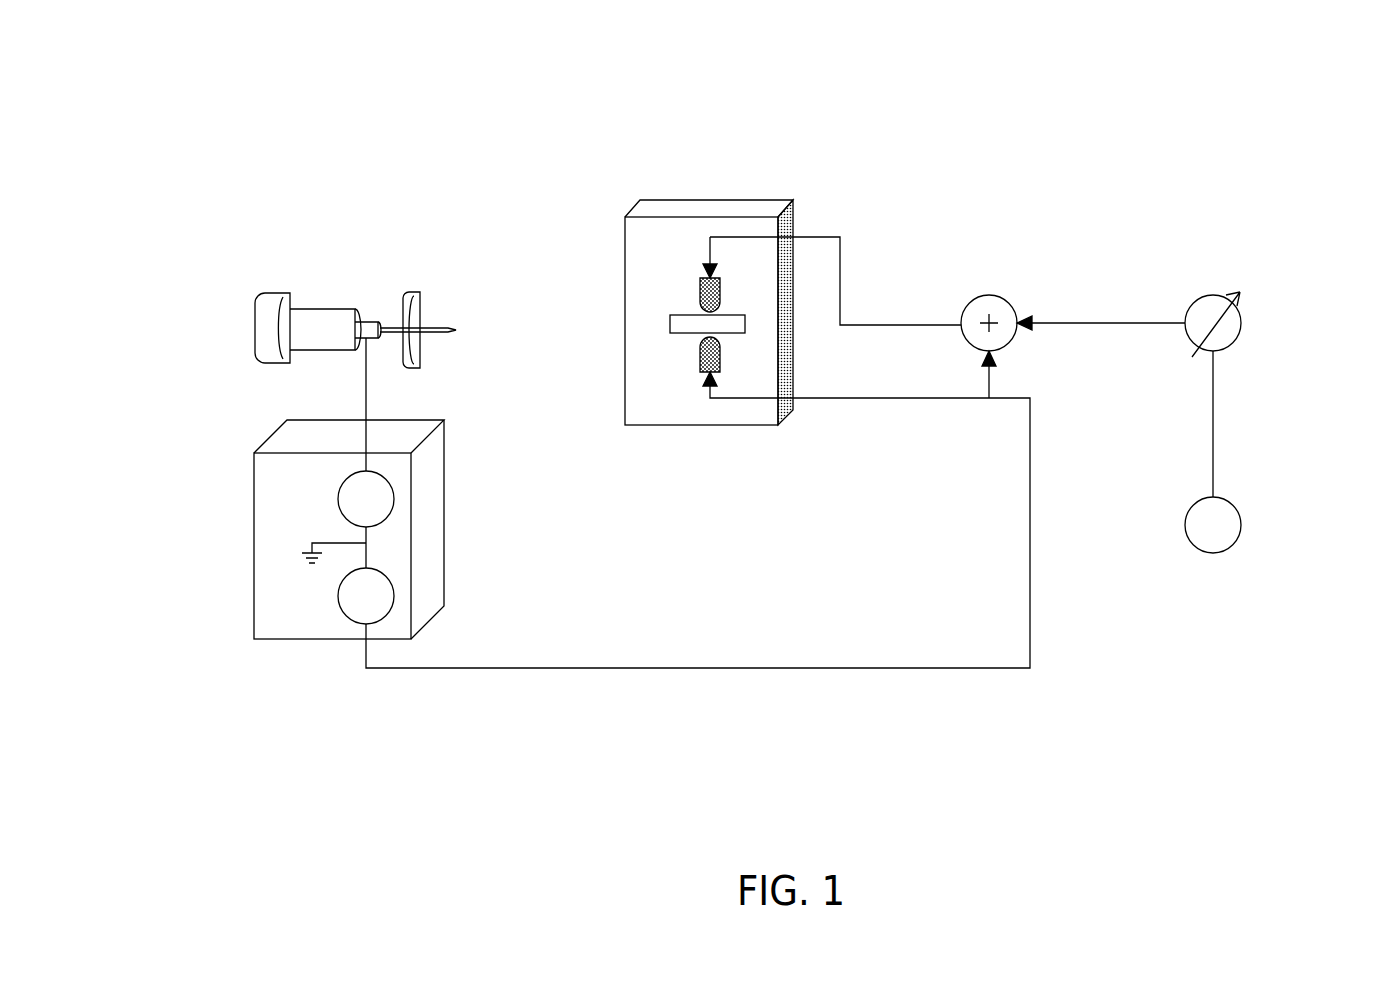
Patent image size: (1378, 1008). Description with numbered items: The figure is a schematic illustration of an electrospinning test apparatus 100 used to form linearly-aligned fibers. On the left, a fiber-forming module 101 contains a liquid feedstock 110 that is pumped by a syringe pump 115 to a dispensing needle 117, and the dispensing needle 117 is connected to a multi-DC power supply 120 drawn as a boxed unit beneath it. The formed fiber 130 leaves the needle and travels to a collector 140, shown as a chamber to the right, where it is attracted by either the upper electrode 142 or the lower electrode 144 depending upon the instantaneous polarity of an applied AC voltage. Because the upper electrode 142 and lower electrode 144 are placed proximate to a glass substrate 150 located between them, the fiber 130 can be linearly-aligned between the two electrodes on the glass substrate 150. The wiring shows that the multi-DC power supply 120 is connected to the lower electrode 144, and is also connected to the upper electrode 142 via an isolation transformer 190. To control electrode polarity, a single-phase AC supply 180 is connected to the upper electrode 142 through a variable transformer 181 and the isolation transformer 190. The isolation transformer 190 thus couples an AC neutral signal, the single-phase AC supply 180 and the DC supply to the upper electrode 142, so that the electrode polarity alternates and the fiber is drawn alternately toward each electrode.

The electrospinning test apparatus 100 is at (1037, 137).
The fiber-forming module 101 is at (248, 232).
The liquid feedstock 110 is at (320, 325).
The syringe pump 115 is at (258, 363).
The dispensing needle 117 is at (432, 332).
The multi-DC power supply 120 is at (272, 640).
The fiber 130 is at (412, 290).
The collector 140 is at (758, 200).
The upper electrode 142 is at (702, 285).
The lower electrode 144 is at (700, 358).
The glass substrate 150 is at (673, 330).
The single-phase 120V AC supply 180 is at (1243, 523).
The variable transformer 181 is at (1243, 332).
The isolation transformer 190 is at (1005, 297).